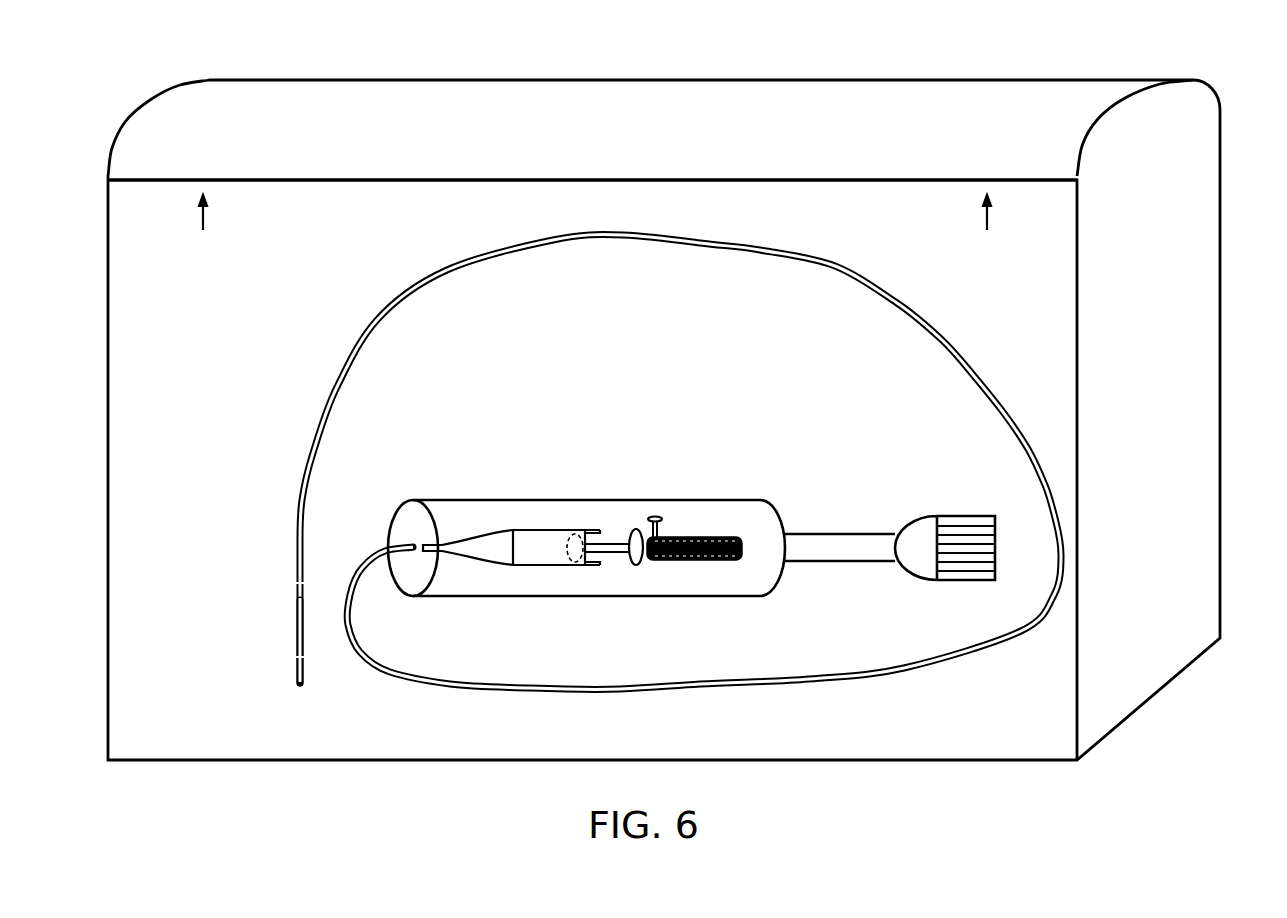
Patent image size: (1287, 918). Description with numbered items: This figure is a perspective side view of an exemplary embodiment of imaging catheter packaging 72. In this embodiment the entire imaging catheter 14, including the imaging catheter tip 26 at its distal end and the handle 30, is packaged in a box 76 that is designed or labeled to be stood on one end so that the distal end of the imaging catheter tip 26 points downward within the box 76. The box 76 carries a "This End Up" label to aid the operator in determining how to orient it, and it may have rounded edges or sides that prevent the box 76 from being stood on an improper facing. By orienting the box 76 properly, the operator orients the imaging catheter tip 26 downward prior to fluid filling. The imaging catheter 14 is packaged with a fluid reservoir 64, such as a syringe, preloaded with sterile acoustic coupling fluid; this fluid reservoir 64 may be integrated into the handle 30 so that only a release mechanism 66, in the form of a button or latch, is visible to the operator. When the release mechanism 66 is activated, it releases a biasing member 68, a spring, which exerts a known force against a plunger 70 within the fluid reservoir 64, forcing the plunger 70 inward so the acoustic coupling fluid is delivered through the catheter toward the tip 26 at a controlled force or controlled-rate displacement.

The imaging catheter packaging 72 is at (130, 76).
The box 76 is at (1228, 124).
The imaging catheter 14 is at (272, 364).
The tip 26 is at (291, 606).
The handle 30 is at (473, 520).
The fluid reservoir 64 is at (538, 528).
The plunger 70 is at (612, 528).
The release mechanism 66 is at (650, 510).
The biasing member 68 is at (731, 530).